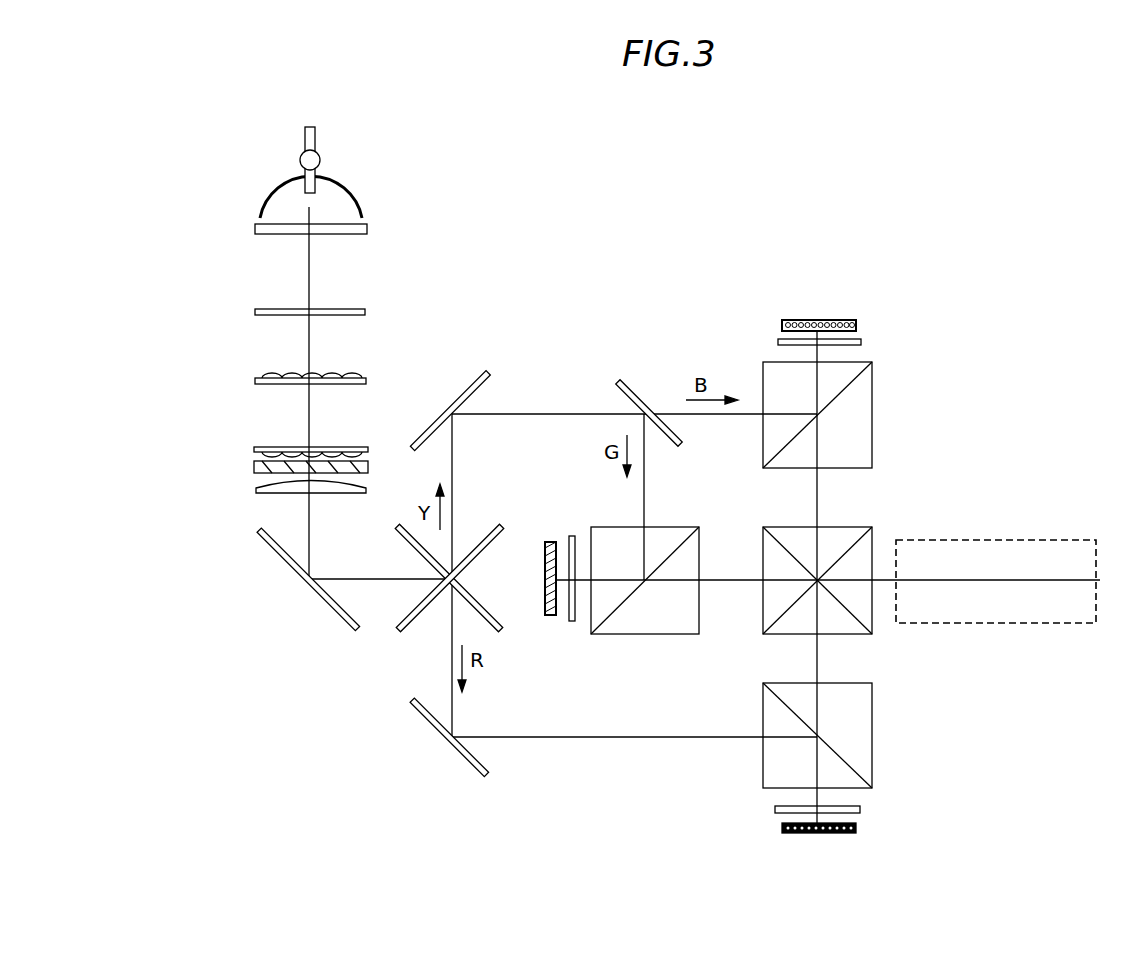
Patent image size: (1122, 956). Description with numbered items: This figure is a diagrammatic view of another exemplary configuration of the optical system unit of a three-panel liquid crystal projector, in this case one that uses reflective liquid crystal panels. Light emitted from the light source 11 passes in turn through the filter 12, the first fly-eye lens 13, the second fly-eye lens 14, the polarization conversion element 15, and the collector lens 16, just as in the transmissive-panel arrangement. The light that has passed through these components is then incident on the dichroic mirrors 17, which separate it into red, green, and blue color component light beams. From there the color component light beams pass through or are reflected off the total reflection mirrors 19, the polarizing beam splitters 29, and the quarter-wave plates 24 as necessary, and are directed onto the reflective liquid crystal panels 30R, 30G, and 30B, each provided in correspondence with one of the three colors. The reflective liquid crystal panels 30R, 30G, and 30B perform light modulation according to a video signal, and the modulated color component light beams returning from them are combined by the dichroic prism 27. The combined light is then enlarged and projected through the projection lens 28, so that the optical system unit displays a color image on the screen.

The light source 11 is at (258, 156).
The filter 12 is at (243, 310).
The first fly-eye lens 13 is at (243, 387).
The second fly-eye lens 14 is at (242, 452).
The polarization conversion element 15 is at (242, 468).
The collector lens 16 is at (338, 498).
The dichroic mirror 17 is at (398, 640).
The total reflection mirror 19 is at (286, 580).
The quarter-wave plate 24 is at (866, 343).
The dichroic prism 27 is at (880, 628).
The projection lens 28 is at (1006, 632).
The polarizing beam splitter 29 is at (878, 416).
The reflective liquid crystal panel 30B is at (860, 324).
The reflective liquid crystal panel 30G is at (549, 625).
The reflective liquid crystal panel 30R is at (860, 830).